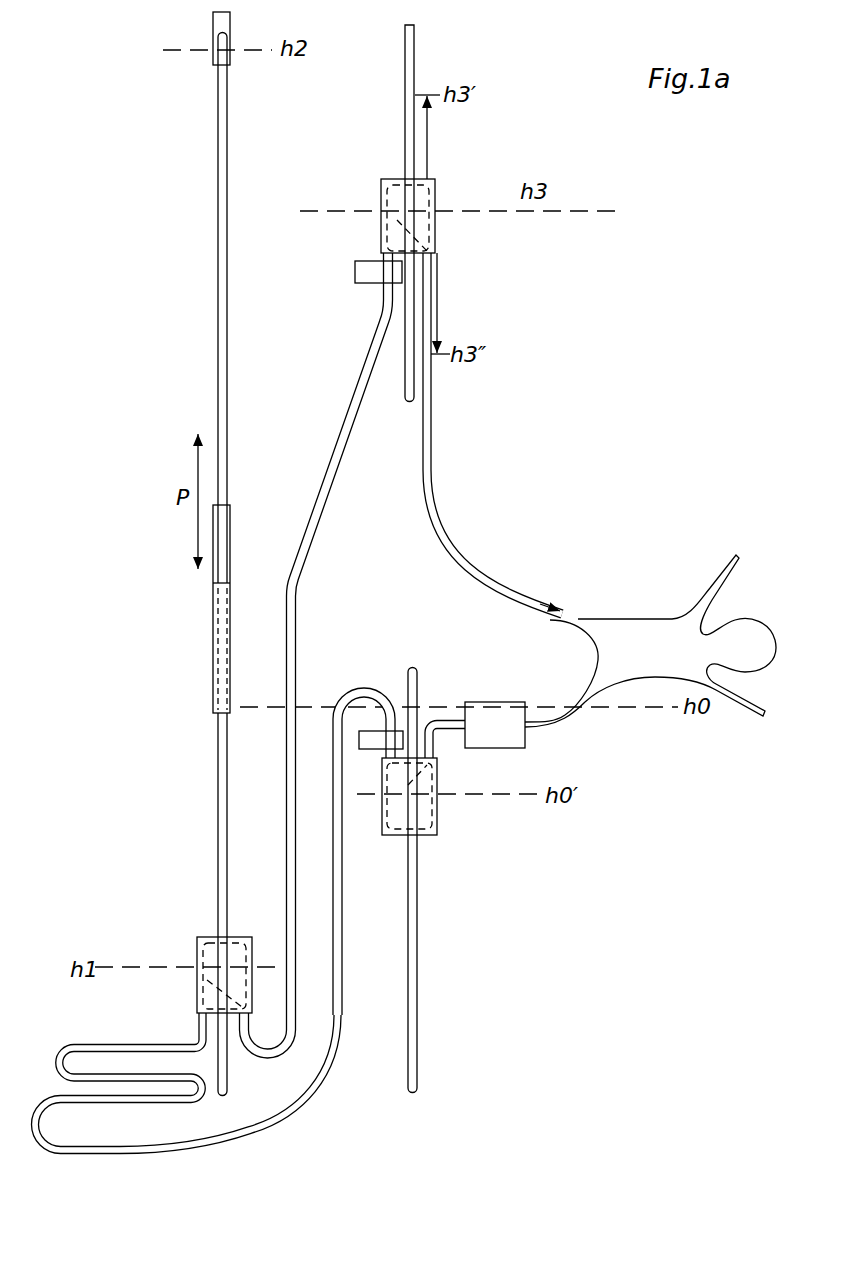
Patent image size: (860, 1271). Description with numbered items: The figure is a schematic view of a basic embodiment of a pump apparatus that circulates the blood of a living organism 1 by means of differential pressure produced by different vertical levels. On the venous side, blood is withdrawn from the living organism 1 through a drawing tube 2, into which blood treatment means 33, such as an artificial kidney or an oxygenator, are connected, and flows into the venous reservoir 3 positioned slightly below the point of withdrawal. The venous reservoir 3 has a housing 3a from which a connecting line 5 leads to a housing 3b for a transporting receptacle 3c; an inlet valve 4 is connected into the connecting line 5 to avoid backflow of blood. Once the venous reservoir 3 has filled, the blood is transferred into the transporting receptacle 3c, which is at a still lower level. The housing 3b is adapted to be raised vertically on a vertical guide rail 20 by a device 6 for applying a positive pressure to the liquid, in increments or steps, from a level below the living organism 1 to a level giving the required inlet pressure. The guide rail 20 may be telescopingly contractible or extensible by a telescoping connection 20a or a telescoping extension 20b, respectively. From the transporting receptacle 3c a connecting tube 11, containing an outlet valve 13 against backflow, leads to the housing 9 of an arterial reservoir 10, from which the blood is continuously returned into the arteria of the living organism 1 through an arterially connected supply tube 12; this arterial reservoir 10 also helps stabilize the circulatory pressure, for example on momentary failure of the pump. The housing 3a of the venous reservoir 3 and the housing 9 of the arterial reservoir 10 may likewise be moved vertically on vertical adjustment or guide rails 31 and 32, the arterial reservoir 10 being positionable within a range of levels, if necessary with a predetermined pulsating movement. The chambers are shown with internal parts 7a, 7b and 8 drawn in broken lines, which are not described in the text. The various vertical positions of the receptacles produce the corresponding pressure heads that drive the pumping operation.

The living organism 1 is at (643, 631).
The drawing tube 2 is at (545, 727).
The venous reservoir 3 is at (443, 811).
The housing of venous receptacle 3a is at (437, 773).
The housing for transporting receptacle 3b is at (196, 935).
The transporting receptacle 3c is at (194, 956).
The inlet valve 4 is at (373, 740).
The connecting line 5 is at (257, 1128).
The device for applying positive pressure 6 is at (195, 697).
The chamber partition 7a is at (438, 838).
The chamber partition 7b is at (248, 938).
The membrane 8 is at (378, 206).
The housing of arterial reservoir 9 is at (385, 182).
The arterial reservoir 10 is at (439, 240).
The connecting tube 11 is at (325, 500).
The supply tube 12 is at (460, 555).
The outlet valve 13 is at (361, 261).
The vertical guide rail 20 is at (217, 268).
The telescoping connection 20a is at (230, 527).
The telescoping extension 20b is at (212, 21).
The guide rail 31 is at (404, 110).
The guide rail 32 is at (417, 979).
The blood treatment means 33 is at (488, 700).